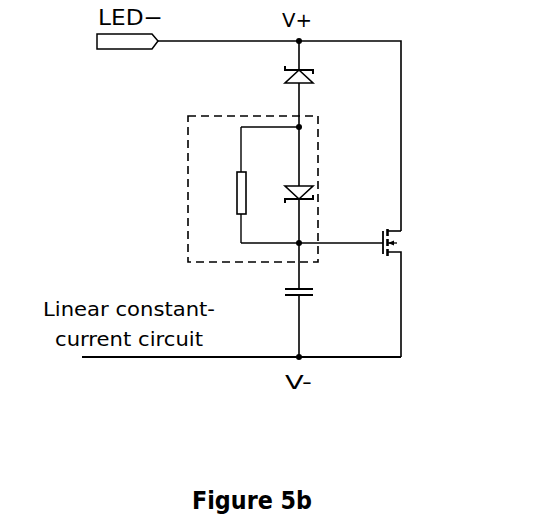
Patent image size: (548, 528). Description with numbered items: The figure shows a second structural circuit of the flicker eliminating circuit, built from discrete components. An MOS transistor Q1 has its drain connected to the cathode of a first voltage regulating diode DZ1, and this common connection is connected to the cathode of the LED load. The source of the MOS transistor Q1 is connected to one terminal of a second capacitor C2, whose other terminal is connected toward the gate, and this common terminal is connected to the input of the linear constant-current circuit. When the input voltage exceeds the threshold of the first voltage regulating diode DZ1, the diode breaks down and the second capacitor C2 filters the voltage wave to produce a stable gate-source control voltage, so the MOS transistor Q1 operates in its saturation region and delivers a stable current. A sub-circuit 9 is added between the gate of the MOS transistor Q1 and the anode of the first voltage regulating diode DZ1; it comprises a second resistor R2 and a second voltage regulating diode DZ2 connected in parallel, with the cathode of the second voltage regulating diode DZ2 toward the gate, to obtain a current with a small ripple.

The sub-circuit 9 is at (220, 178).
The first voltage regulating diode DZ1 is at (325, 84).
The second voltage regulating diode DZ2 is at (326, 195).
The second resistor R2 is at (222, 185).
The second capacitor C2 is at (318, 295).
The MOS transistor Q1 is at (410, 286).